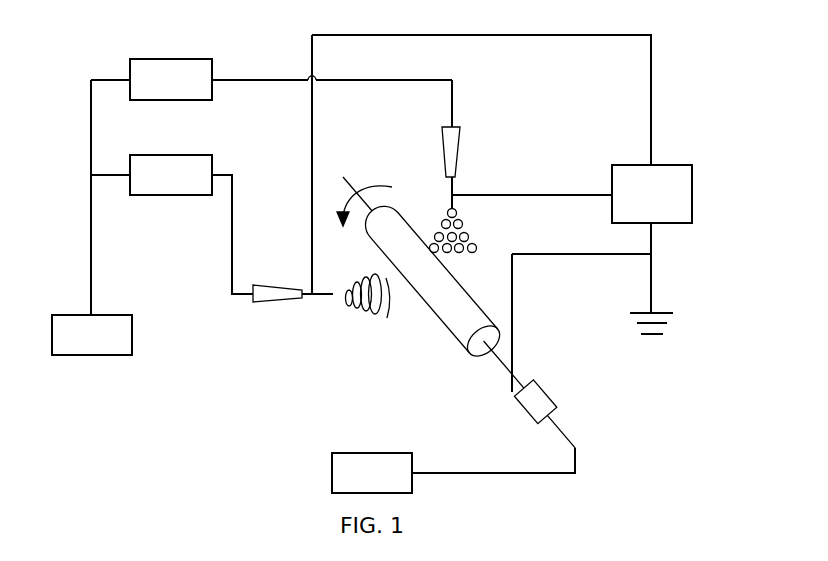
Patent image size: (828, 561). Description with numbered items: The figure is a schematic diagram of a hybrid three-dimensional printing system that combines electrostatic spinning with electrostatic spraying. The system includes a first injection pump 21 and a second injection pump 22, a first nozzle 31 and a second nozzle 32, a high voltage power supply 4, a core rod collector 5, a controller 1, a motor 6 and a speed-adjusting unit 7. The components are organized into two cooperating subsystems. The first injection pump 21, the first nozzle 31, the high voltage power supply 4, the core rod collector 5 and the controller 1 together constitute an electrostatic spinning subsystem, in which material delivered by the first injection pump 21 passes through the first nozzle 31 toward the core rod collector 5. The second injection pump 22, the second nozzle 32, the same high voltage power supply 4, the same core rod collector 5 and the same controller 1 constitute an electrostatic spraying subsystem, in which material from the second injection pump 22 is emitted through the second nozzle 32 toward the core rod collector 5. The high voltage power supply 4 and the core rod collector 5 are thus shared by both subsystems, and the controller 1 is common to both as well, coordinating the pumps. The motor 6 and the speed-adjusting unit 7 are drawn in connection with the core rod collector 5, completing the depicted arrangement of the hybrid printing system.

The controller 1 is at (92, 335).
The first injection pump 21 is at (171, 175).
The second injection pump 22 is at (171, 79).
The first nozzle 31 is at (270, 295).
The second nozzle 32 is at (448, 152).
The high voltage power supply 4 is at (652, 194).
The core rod collector 5 is at (453, 323).
The motor 6 is at (537, 400).
The speed-adjusting unit 7 is at (372, 473).